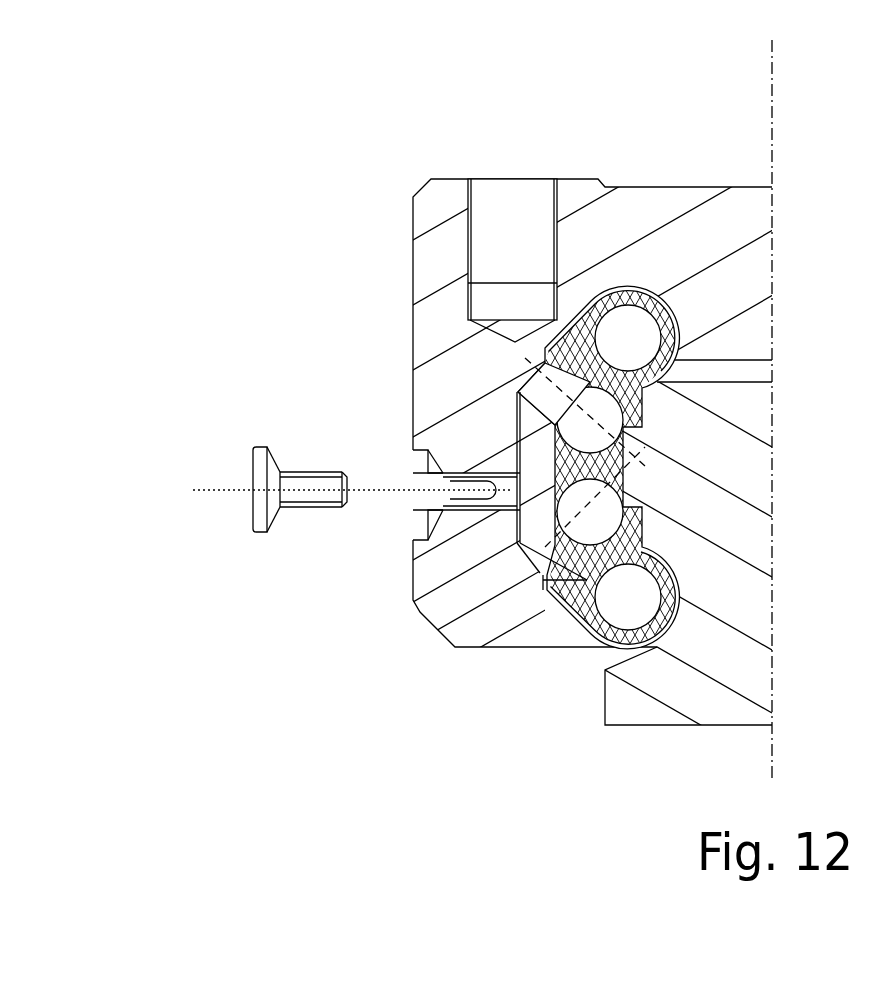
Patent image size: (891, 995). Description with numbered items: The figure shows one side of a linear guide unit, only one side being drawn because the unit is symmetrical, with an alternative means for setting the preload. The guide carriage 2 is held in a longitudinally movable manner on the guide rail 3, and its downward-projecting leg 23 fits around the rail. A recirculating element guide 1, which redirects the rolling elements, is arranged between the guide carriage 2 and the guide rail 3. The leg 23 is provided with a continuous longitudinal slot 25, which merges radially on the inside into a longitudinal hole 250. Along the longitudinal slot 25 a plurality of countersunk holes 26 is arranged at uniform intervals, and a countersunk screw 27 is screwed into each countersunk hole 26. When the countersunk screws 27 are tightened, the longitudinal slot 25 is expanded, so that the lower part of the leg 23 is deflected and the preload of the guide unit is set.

The recirculating element guide 1 is at (527, 439).
The guide carriage 2 is at (668, 202).
The guide rail 3 is at (625, 693).
The leg 23 is at (447, 595).
The longitudinal slot 25 is at (427, 492).
The countersunk hole 26 is at (414, 464).
The countersunk screw 27 is at (250, 466).
The longitudinal hole 250 is at (490, 498).